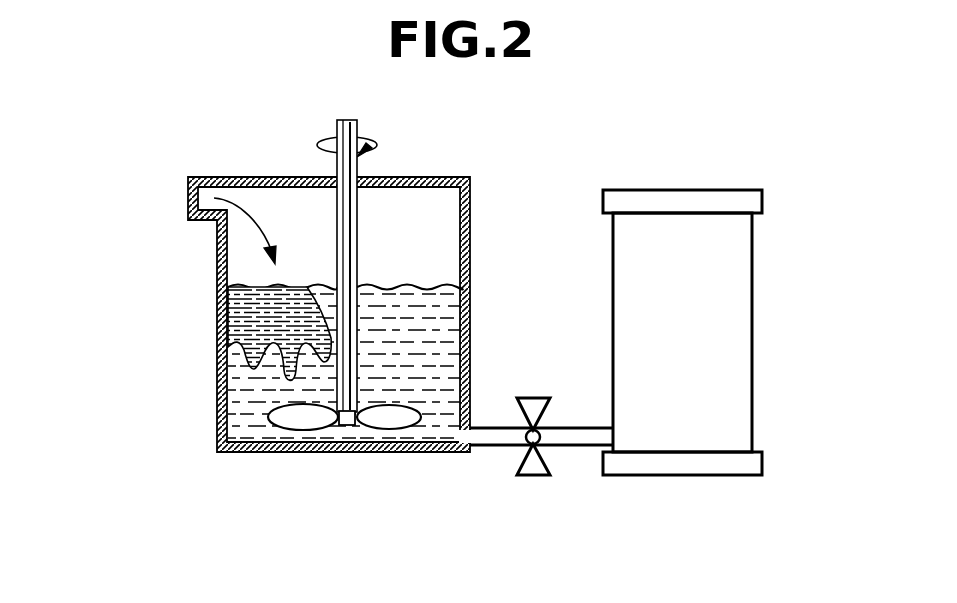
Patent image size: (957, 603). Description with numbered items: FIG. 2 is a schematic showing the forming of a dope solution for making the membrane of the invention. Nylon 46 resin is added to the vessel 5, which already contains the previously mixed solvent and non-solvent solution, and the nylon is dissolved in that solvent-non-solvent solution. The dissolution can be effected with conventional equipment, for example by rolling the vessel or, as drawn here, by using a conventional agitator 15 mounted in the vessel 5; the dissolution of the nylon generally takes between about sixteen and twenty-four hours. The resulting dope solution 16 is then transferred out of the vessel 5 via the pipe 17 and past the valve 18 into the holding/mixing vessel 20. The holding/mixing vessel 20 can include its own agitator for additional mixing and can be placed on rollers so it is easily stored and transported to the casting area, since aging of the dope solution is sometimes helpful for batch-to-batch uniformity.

The vessel 5 is at (205, 394).
The Nylon 46 resin 46 is at (194, 197).
The agitator 15 is at (297, 414).
The dope solution 16 is at (492, 440).
The pipe 17 is at (503, 426).
The valve 18 is at (538, 466).
The holding/mixing vessel 20 is at (762, 290).